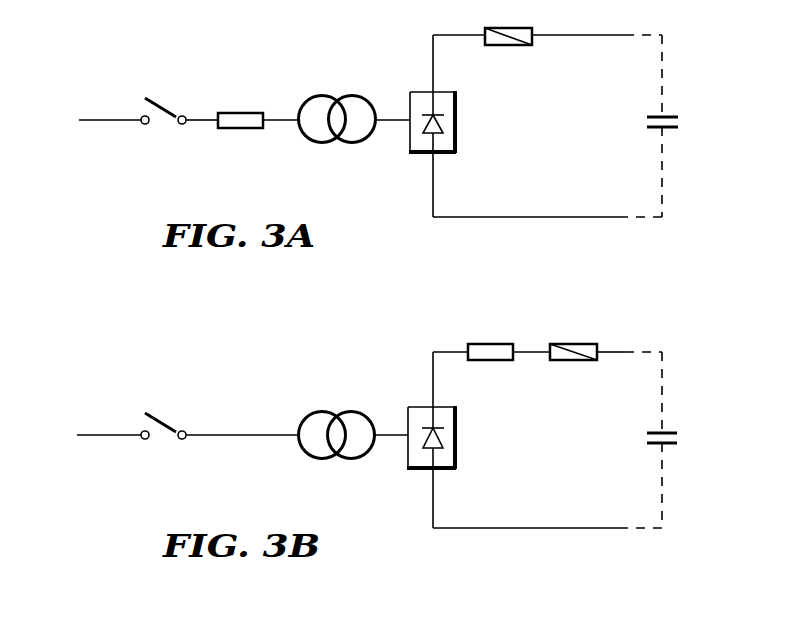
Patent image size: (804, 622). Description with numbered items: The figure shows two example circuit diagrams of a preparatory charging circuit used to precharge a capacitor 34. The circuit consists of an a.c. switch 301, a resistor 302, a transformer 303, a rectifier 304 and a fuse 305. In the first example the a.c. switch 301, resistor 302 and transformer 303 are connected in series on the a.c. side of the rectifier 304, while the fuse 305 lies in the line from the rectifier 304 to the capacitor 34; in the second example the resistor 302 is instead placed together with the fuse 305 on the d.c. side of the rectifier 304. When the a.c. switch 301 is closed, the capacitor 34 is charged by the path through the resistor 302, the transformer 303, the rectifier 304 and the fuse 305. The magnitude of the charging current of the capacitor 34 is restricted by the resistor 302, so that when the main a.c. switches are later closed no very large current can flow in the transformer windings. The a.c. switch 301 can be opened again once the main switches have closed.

In FIG. 3A, the a.c. switch 301 is at (163, 78).
In FIG. 3B, the a.c. switch 301 is at (158, 410).
In FIG. 3A, the resistor 302 is at (243, 112).
In FIG. 3B, the resistor 302 is at (488, 363).
In FIG. 3A, the transformer 303 is at (352, 95).
In FIG. 3B, the transformer 303 is at (350, 410).
In FIG. 3A, the rectifier 304 is at (445, 153).
In FIG. 3B, the rectifier 304 is at (445, 469).
In FIG. 3A, the fuse 305 is at (510, 46).
In FIG. 3B, the fuse 305 is at (565, 362).
In FIG. 3A, the capacitor 34 is at (653, 130).
In FIG. 3B, the capacitor 34 is at (651, 446).